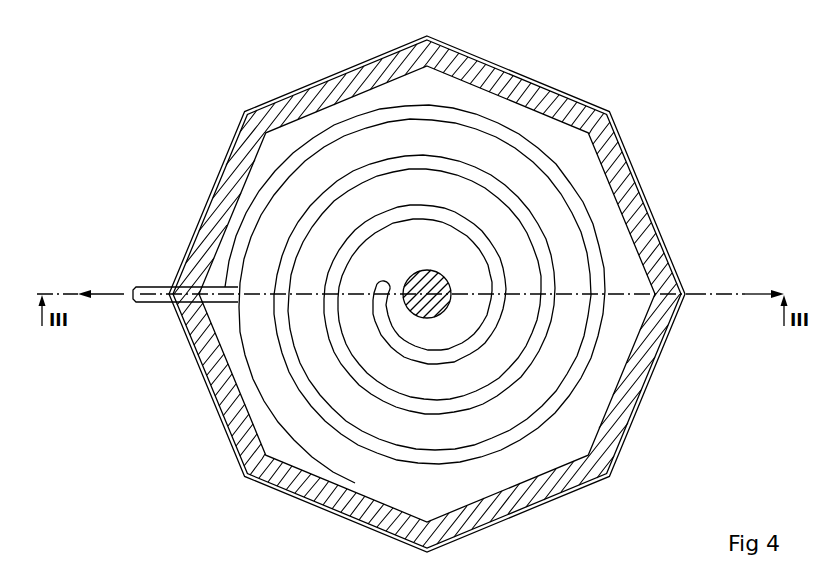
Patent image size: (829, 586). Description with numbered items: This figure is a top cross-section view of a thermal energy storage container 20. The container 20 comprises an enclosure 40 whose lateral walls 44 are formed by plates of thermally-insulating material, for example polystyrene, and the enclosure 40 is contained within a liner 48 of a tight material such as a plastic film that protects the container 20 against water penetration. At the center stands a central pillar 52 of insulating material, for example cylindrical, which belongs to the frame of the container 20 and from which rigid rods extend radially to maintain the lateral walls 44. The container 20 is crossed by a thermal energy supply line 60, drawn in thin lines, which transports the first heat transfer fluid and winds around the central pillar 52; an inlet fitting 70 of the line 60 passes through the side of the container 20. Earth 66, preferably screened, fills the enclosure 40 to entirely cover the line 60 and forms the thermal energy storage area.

The container 20 is at (608, 55).
The enclosure 40 is at (517, 66).
The lateral walls 44 is at (628, 187).
The liner 48 is at (652, 238).
The central pillar 52 is at (417, 276).
The thermal energy supply line 60 is at (580, 390).
The earth 66 is at (526, 468).
The inlet fitting 70 is at (150, 302).